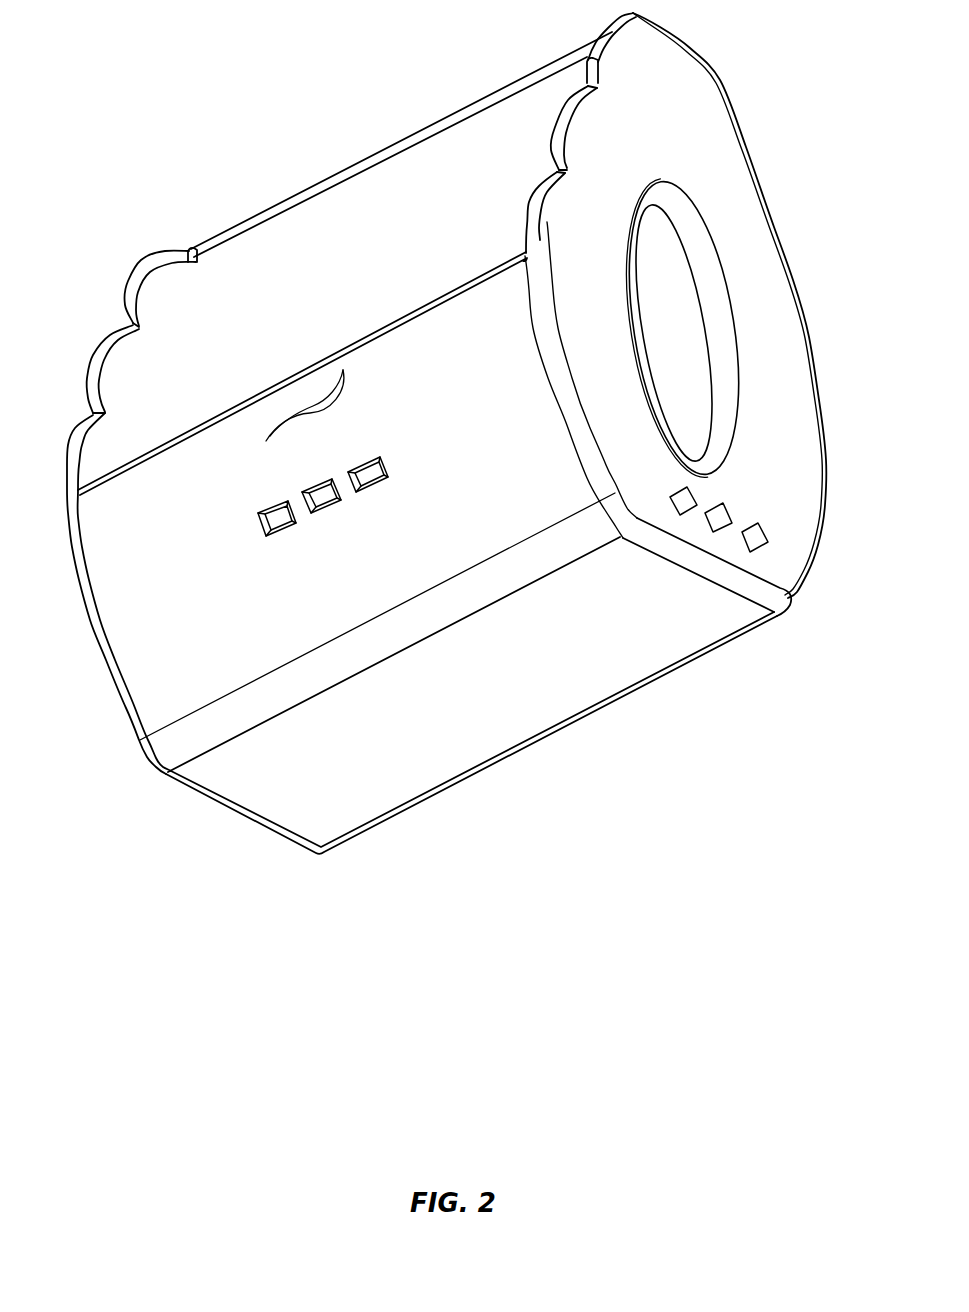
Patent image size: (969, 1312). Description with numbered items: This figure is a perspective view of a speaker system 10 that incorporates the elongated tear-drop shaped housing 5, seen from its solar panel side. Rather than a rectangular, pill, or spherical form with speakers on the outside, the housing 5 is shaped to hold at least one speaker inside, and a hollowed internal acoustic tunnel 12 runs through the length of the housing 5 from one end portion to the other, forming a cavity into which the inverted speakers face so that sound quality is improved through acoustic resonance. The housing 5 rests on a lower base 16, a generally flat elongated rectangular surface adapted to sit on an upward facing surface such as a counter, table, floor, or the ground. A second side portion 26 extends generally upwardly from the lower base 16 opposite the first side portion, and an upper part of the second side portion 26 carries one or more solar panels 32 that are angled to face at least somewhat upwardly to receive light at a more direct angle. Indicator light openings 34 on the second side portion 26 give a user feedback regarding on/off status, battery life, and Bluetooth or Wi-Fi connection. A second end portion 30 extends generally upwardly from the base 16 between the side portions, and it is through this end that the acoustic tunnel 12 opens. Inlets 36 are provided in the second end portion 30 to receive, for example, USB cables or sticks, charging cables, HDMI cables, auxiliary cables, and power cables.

The speaker system 10 is at (316, 118).
The housing 5 is at (700, 118).
The acoustic tunnel 12 is at (658, 253).
The lower base 16 is at (537, 702).
The second side portion 26 is at (138, 558).
The second end portion 30 is at (800, 378).
The solar panels 32 is at (263, 256).
The indicator light openings 34 is at (357, 457).
The inlets 36 is at (690, 488).